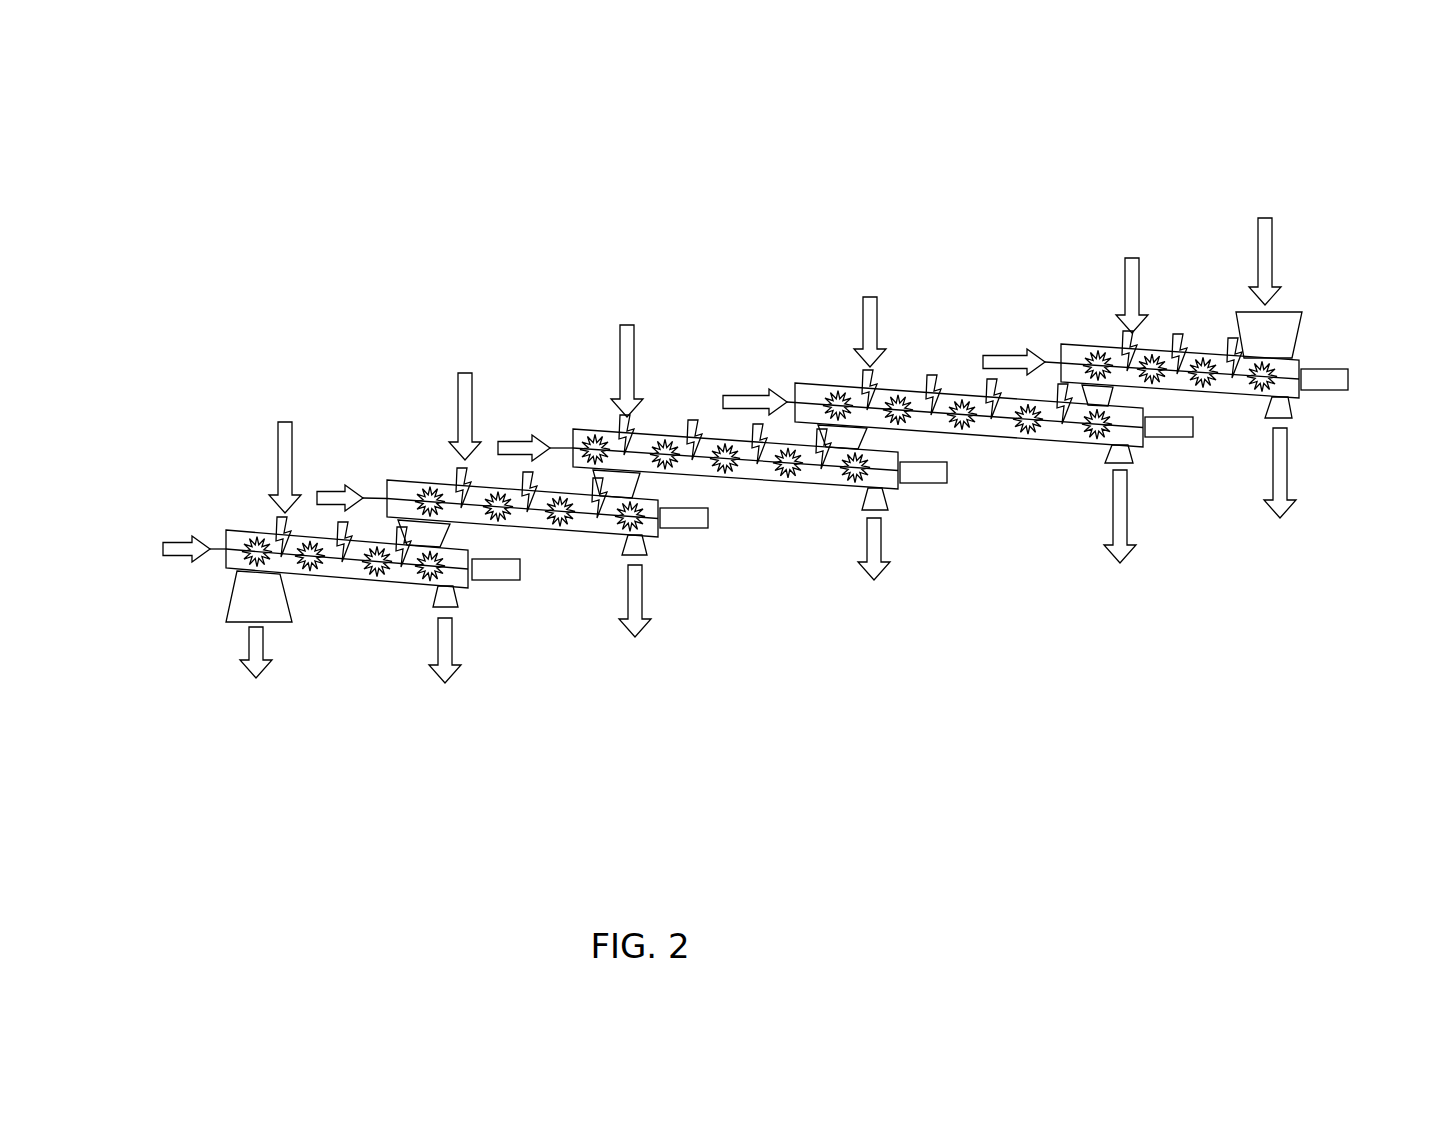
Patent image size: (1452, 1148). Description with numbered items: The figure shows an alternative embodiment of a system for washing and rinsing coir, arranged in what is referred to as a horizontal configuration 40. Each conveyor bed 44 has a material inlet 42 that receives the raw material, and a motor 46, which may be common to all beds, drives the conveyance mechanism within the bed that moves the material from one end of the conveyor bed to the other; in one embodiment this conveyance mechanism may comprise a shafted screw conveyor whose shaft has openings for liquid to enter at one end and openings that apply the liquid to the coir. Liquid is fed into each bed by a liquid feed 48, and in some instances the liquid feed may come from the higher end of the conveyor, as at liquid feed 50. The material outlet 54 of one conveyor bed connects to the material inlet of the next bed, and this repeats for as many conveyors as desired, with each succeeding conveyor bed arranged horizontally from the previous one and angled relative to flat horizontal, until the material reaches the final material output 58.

The horizontal configuration 40 is at (910, 101).
The material inlet 42 is at (1305, 352).
The conveyor bed 44 is at (1303, 357).
The motor 46 is at (1350, 378).
The liquid feed 48 is at (1122, 280).
The liquid feed from higher end 50 is at (983, 348).
The material outlet 54 is at (1112, 392).
The final material output 58 is at (229, 601).